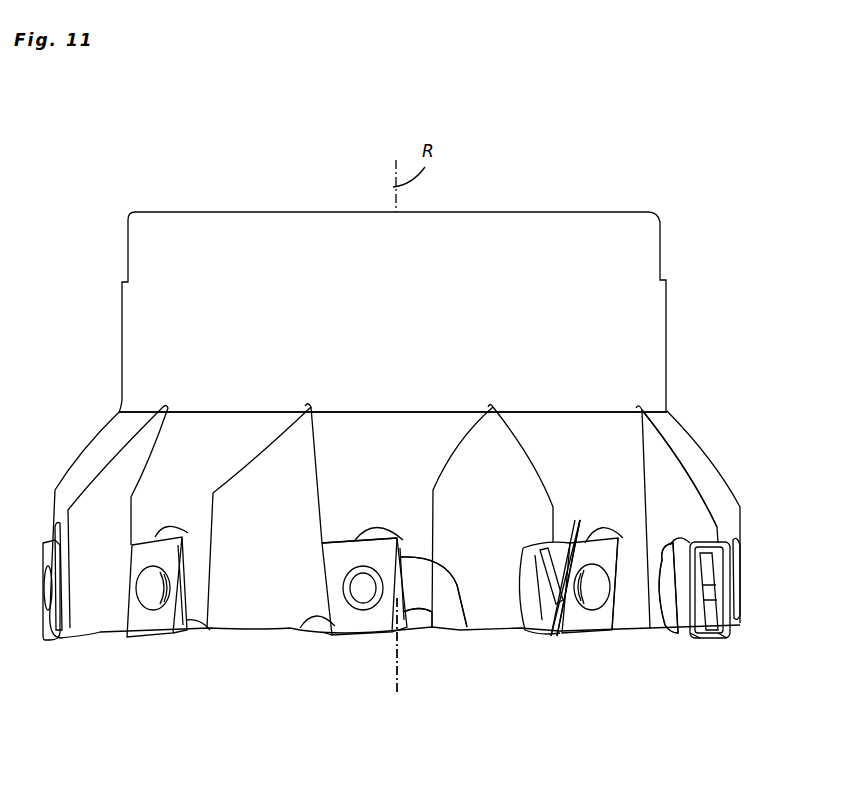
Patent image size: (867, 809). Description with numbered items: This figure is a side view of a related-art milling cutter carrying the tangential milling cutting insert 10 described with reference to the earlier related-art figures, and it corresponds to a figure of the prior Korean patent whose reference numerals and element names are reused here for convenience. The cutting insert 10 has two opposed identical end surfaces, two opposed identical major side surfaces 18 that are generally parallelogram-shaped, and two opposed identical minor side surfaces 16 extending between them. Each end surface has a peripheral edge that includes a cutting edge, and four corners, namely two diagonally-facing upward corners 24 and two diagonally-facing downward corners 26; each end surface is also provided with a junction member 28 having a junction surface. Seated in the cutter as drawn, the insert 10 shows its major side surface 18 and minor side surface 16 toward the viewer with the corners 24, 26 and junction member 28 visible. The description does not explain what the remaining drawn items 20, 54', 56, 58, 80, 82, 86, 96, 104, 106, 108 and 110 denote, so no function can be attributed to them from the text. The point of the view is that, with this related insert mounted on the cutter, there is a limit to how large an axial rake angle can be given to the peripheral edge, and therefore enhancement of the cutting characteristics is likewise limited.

The tangential milling cutting insert 10 is at (582, 632).
The minor side surface 16 is at (355, 634).
The major side surface 18 is at (597, 623).
The clamping wedge 20 is at (684, 596).
The upward corner 24 is at (560, 650).
The downward corner 26 is at (574, 532).
The junction member 28 is at (561, 605).
The cutting insert 54' is at (419, 599).
The side face 56 is at (717, 641).
The side face 58 is at (330, 633).
The milling cutter 80 is at (690, 158).
The cutter body 82 is at (598, 435).
The rotation axis direction 86 is at (414, 666).
The cutting insert 96 is at (353, 540).
The pocket wall 104 is at (437, 620).
The pocket wall 106 is at (443, 635).
The insert seat 108 is at (342, 540).
The chip flute 110 is at (723, 533).